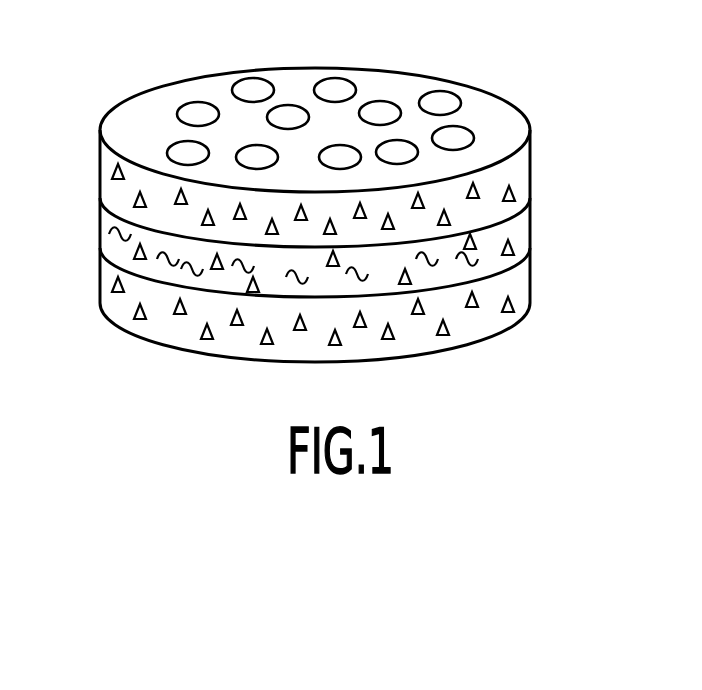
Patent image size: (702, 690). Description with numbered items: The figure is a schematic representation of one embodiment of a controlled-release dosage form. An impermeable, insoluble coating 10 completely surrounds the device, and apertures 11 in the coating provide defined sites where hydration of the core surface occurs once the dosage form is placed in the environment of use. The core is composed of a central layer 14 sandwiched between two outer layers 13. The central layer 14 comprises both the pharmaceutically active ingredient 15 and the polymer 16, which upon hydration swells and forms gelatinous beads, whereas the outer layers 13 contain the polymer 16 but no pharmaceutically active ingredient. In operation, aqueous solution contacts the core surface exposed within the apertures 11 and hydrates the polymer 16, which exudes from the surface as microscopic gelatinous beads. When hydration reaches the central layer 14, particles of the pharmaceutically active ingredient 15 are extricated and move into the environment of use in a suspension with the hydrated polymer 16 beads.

The impermeable, insoluble coating 10 is at (492, 122).
The apertures 11 is at (200, 112).
The outer layers 13 is at (511, 170).
The central layer 14 is at (515, 229).
The pharmaceutically active ingredient 15 is at (115, 233).
The polymer 16 is at (115, 168).